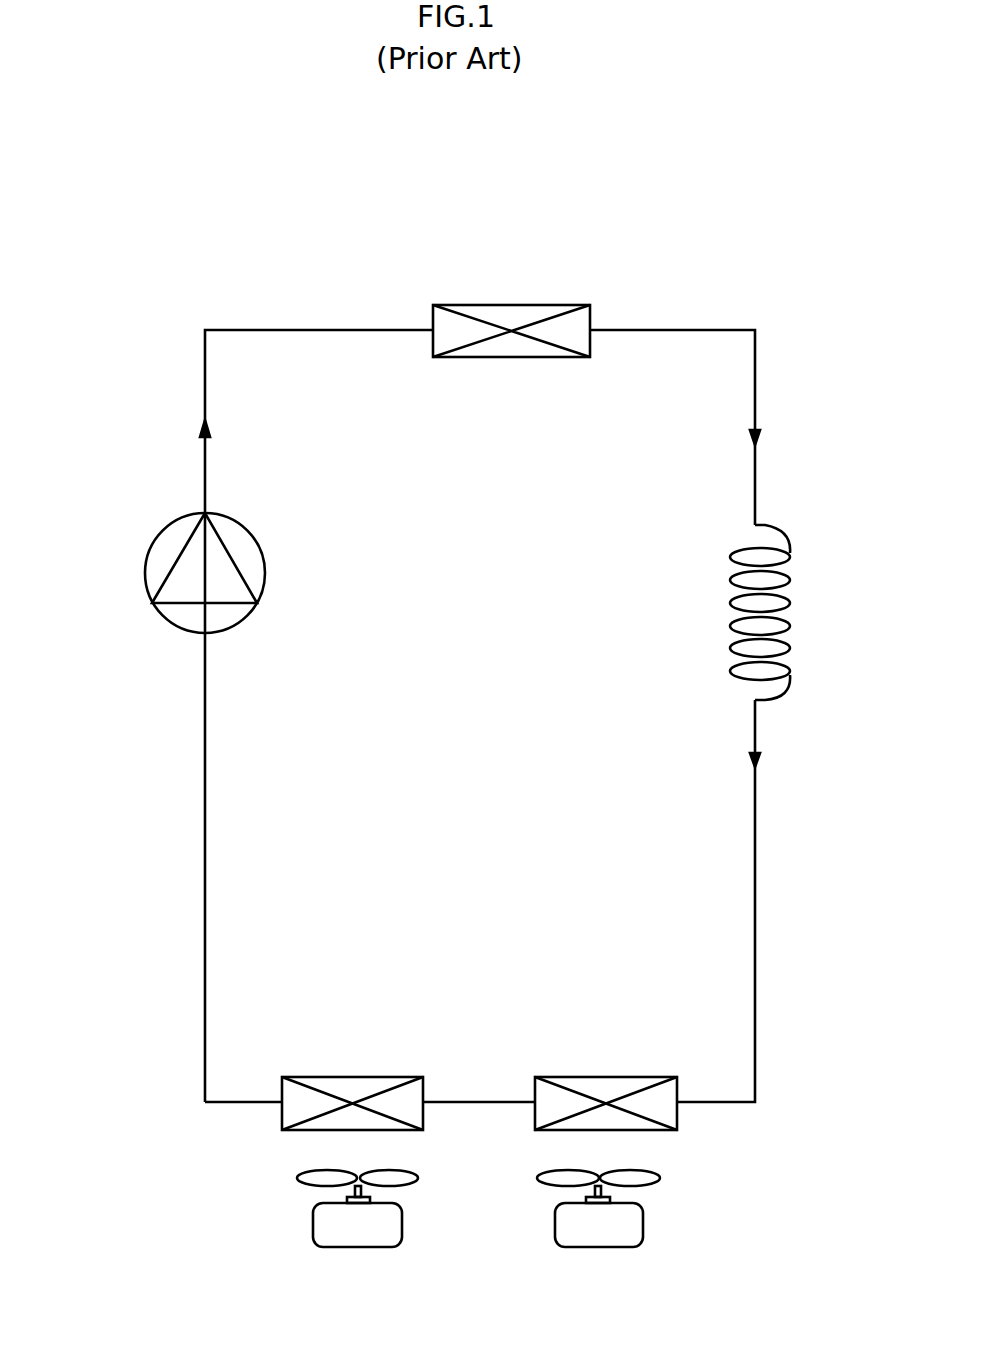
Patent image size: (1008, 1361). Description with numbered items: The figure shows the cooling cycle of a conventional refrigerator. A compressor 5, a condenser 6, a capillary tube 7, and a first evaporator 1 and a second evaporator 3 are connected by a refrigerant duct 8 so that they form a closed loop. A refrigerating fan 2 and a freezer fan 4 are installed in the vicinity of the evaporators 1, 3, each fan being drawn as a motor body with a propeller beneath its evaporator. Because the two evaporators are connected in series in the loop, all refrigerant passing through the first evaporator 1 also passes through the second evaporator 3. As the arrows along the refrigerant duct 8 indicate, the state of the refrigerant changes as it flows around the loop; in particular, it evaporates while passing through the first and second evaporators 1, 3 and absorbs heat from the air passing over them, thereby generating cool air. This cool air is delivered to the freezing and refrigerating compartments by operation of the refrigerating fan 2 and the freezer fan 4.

The first evaporator 1 is at (597, 1077).
The refrigerating fan 2 is at (643, 1223).
The second evaporator 3 is at (358, 1077).
The freezer fan 4 is at (313, 1223).
The compressor 5 is at (160, 530).
The condenser 6 is at (563, 305).
The capillary tube 7 is at (790, 613).
The refrigerant duct 8 is at (205, 857).